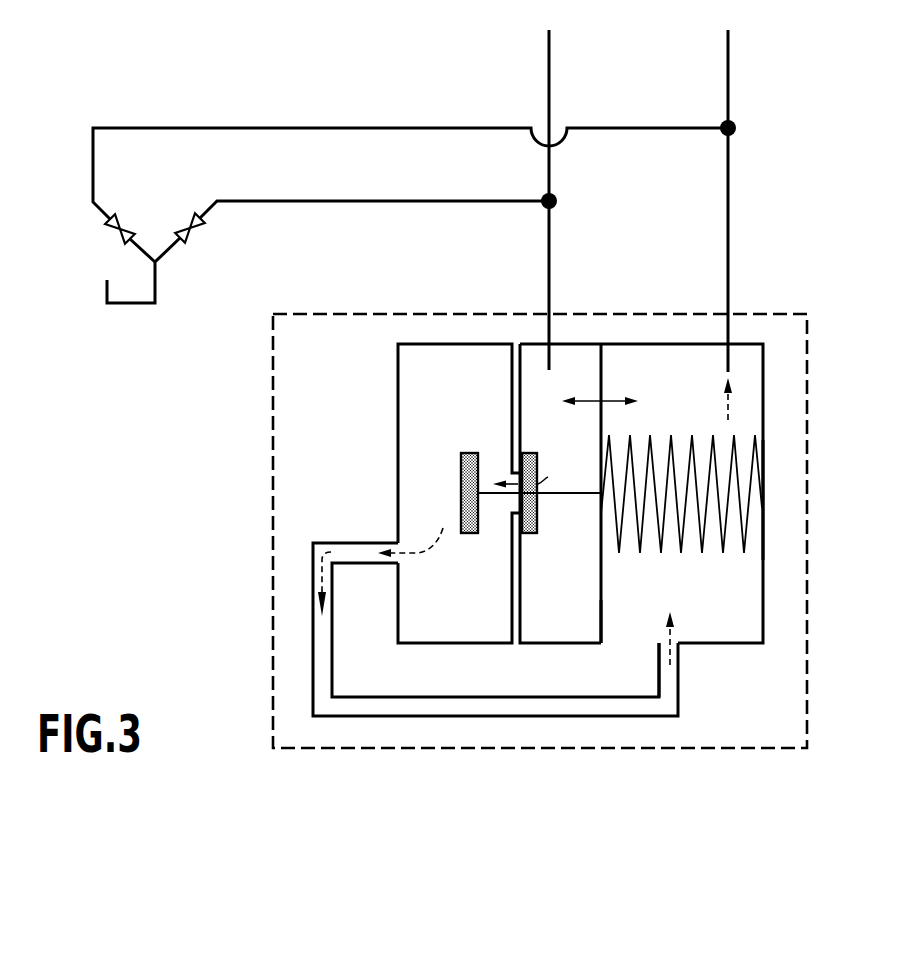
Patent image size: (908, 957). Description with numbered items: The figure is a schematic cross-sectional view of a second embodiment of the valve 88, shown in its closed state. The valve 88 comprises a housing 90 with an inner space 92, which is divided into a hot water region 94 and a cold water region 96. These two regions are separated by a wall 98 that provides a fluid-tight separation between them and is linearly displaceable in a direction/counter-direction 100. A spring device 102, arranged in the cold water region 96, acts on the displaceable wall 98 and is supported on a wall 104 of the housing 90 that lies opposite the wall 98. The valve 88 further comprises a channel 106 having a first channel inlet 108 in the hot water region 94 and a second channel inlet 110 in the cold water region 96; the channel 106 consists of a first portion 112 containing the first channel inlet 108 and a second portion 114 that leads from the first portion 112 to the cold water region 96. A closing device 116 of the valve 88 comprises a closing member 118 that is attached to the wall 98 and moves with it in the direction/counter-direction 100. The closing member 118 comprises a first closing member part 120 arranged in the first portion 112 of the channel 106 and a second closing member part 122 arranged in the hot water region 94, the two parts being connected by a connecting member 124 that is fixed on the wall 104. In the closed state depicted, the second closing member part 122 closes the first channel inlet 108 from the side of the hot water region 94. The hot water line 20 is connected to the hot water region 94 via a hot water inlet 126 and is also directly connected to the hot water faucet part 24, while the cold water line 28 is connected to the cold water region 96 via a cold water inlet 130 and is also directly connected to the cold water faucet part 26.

The hot water line 20 is at (549, 86).
The cold water line 28 is at (728, 200).
The cold water faucet part 26 is at (98, 210).
The hot water faucet part 24 is at (173, 252).
The valve 88 is at (232, 492).
The housing 90 is at (765, 372).
The hot water region 94 is at (571, 385).
The cold water region 96 is at (748, 578).
The spring device 102 is at (653, 455).
The wall of the container 104 is at (765, 493).
The direction/counter-direction 100 is at (606, 394).
The first portion of the channel 112 is at (427, 415).
The closing device 116 is at (467, 372).
The hot water inlet 126 is at (547, 342).
The cold water inlet 130 is at (717, 345).
The second portion of the channel 114 is at (312, 628).
The channel 106 is at (356, 512).
The second channel inlet 110 is at (678, 642).
The inner space 92 is at (638, 623).
The wall 98 is at (600, 608).
The connecting member 124 is at (490, 490).
The first closing member part 120 is at (471, 535).
The second closing member part 122 is at (538, 472).
The first channel inlet 108 is at (526, 525).
The closing member 118 is at (490, 496).